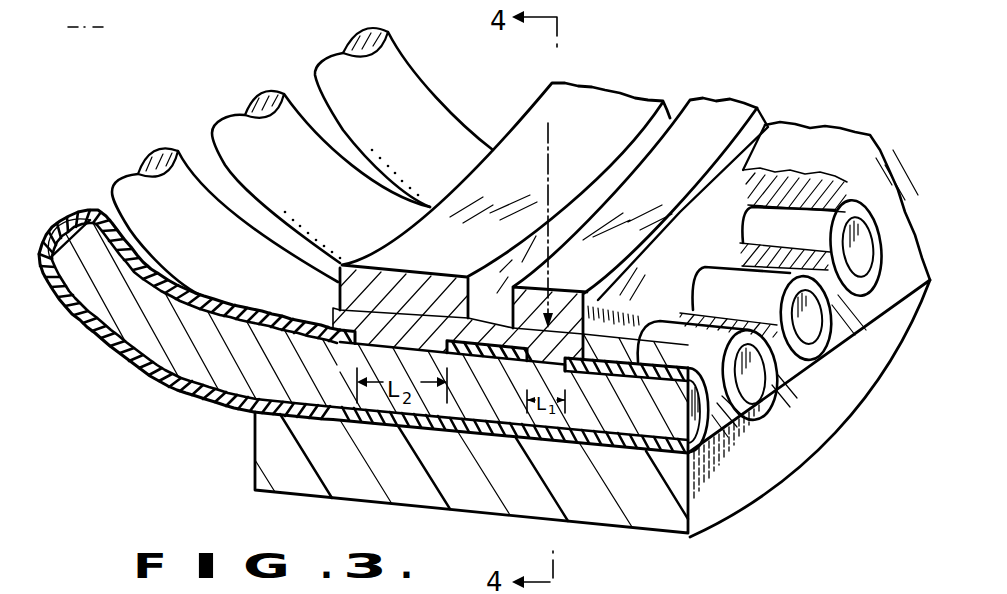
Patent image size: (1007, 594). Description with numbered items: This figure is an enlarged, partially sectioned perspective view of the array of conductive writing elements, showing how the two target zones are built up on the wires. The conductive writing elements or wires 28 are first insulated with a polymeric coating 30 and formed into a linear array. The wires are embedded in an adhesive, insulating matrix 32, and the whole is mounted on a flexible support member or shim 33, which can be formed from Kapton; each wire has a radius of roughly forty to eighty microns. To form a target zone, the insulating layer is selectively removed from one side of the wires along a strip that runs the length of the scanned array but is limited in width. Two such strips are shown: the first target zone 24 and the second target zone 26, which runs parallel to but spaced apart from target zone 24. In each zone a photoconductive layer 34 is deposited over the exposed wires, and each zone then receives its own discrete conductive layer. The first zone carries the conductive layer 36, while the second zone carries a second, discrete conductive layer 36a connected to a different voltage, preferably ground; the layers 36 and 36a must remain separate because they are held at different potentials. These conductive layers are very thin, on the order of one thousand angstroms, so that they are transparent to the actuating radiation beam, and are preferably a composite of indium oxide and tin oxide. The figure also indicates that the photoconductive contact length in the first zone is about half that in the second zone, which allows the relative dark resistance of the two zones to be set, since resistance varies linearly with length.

The target zone 24 is at (745, 70).
The second target zone 26 is at (636, 84).
The conductive writing elements or wires 28 is at (807, 342).
The polymeric coating 30 is at (208, 404).
The adhesive, insulating matrix 32 is at (840, 134).
The flexible support member or shim 33 is at (764, 490).
The photoconductive layer 34 is at (343, 317).
The conductive layer 36 is at (741, 110).
The second conductive layer 36a is at (572, 84).